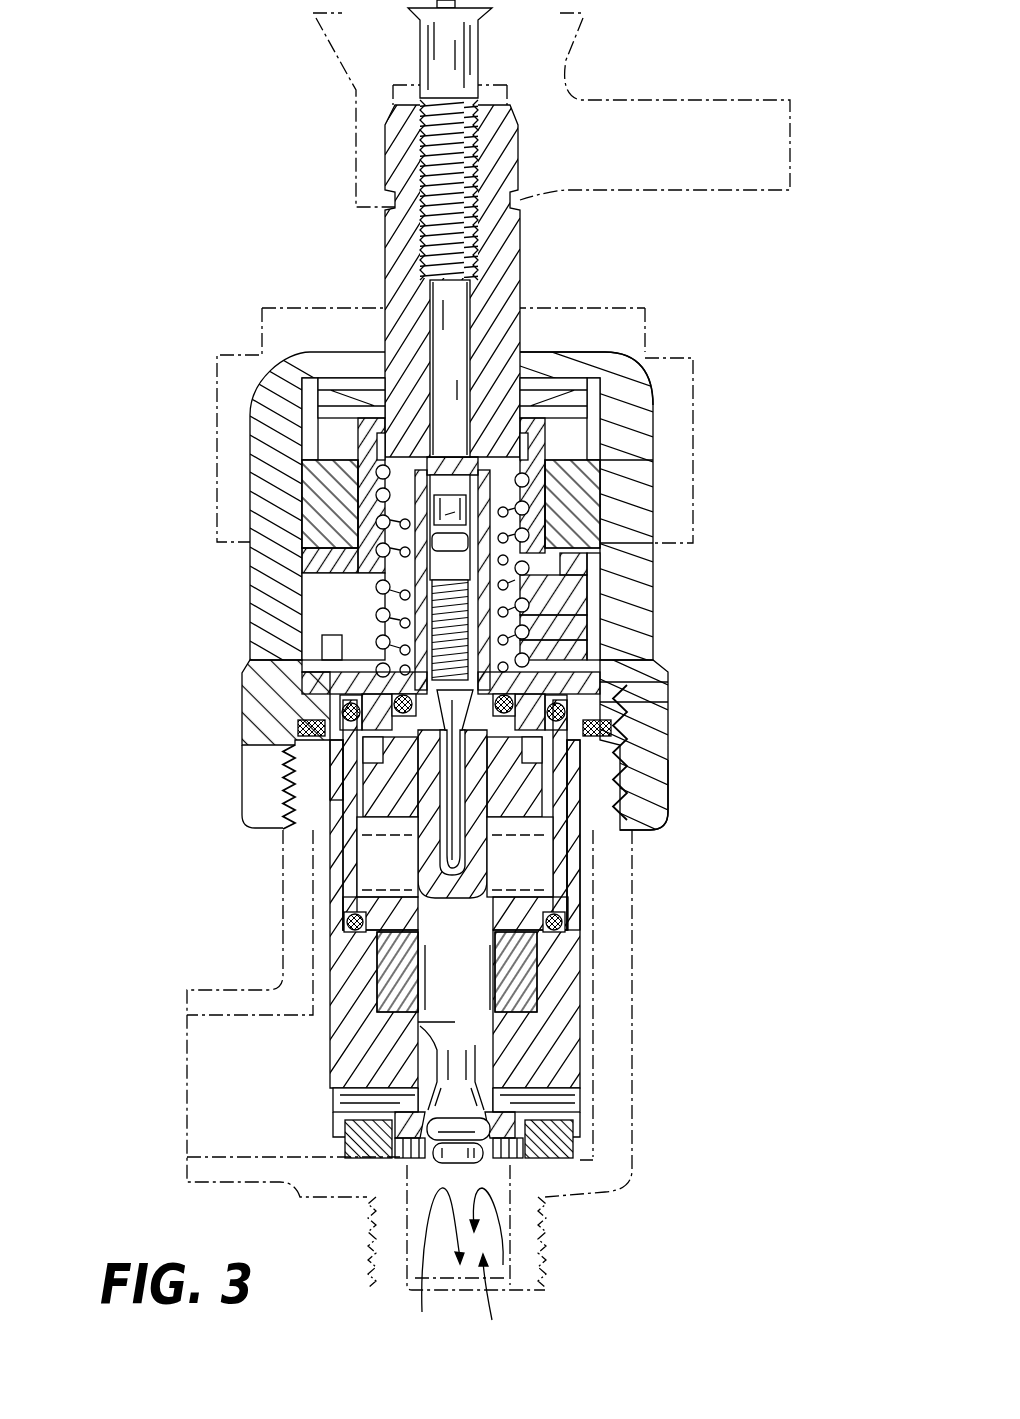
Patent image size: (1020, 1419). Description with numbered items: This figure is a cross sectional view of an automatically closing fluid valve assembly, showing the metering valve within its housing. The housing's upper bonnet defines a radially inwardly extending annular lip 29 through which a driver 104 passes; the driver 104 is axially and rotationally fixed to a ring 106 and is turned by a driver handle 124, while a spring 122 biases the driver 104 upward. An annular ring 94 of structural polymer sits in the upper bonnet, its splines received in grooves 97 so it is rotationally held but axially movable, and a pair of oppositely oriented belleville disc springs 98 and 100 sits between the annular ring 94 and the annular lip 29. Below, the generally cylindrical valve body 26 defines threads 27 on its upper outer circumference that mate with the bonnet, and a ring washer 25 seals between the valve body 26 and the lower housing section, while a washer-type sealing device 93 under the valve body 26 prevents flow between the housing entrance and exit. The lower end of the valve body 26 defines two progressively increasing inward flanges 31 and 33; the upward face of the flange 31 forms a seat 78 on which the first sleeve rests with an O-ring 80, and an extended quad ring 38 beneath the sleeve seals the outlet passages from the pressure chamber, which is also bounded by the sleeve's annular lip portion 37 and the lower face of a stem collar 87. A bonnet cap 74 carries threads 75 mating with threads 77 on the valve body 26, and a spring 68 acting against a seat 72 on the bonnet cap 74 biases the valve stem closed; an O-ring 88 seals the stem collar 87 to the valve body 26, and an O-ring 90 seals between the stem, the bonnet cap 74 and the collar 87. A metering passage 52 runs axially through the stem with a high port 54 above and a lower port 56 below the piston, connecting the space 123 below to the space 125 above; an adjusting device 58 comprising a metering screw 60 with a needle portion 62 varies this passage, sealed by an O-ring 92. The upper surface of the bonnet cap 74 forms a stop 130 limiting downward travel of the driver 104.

The driver handle 124 is at (730, 122).
The driver 104 is at (522, 240).
The annular lip 29 is at (318, 372).
The belleville disc spring 100 is at (610, 372).
The belleville disc spring 98 is at (653, 413).
The adjusting device 58 is at (470, 495).
The annular ring 94 is at (590, 495).
The O-ring 92 is at (525, 548).
The ring 106 is at (600, 565).
The spring 122 is at (590, 600).
The spring 68 is at (585, 625).
The seat 72 is at (580, 652).
The threads 77 is at (668, 680).
The O-ring 90 is at (668, 702).
The O-ring 88 is at (668, 716).
The ring washer 25 is at (612, 740).
The space 125 is at (622, 770).
The threads 27 is at (668, 795).
The needle portion 62 is at (487, 833).
The metering passage 52 is at (553, 853).
The space 123 is at (593, 888).
The O-ring 80 is at (560, 930).
The flange 31 is at (582, 972).
The extended quad ring 38 is at (523, 988).
The valve body 26 is at (510, 1057).
The flange 33 is at (580, 1078).
The sealing device 93 is at (565, 1158).
The metering screw 60 is at (305, 578).
The grooves 97 is at (303, 592).
The stop 130 is at (330, 645).
The threads 75 is at (250, 660).
The bonnet cap 74 is at (252, 690).
The stem collar 87 is at (298, 724).
The high port 54 is at (330, 750).
The lower port 56 is at (343, 845).
The annular lip portion 37 is at (387, 907).
The seat 78 is at (343, 950).